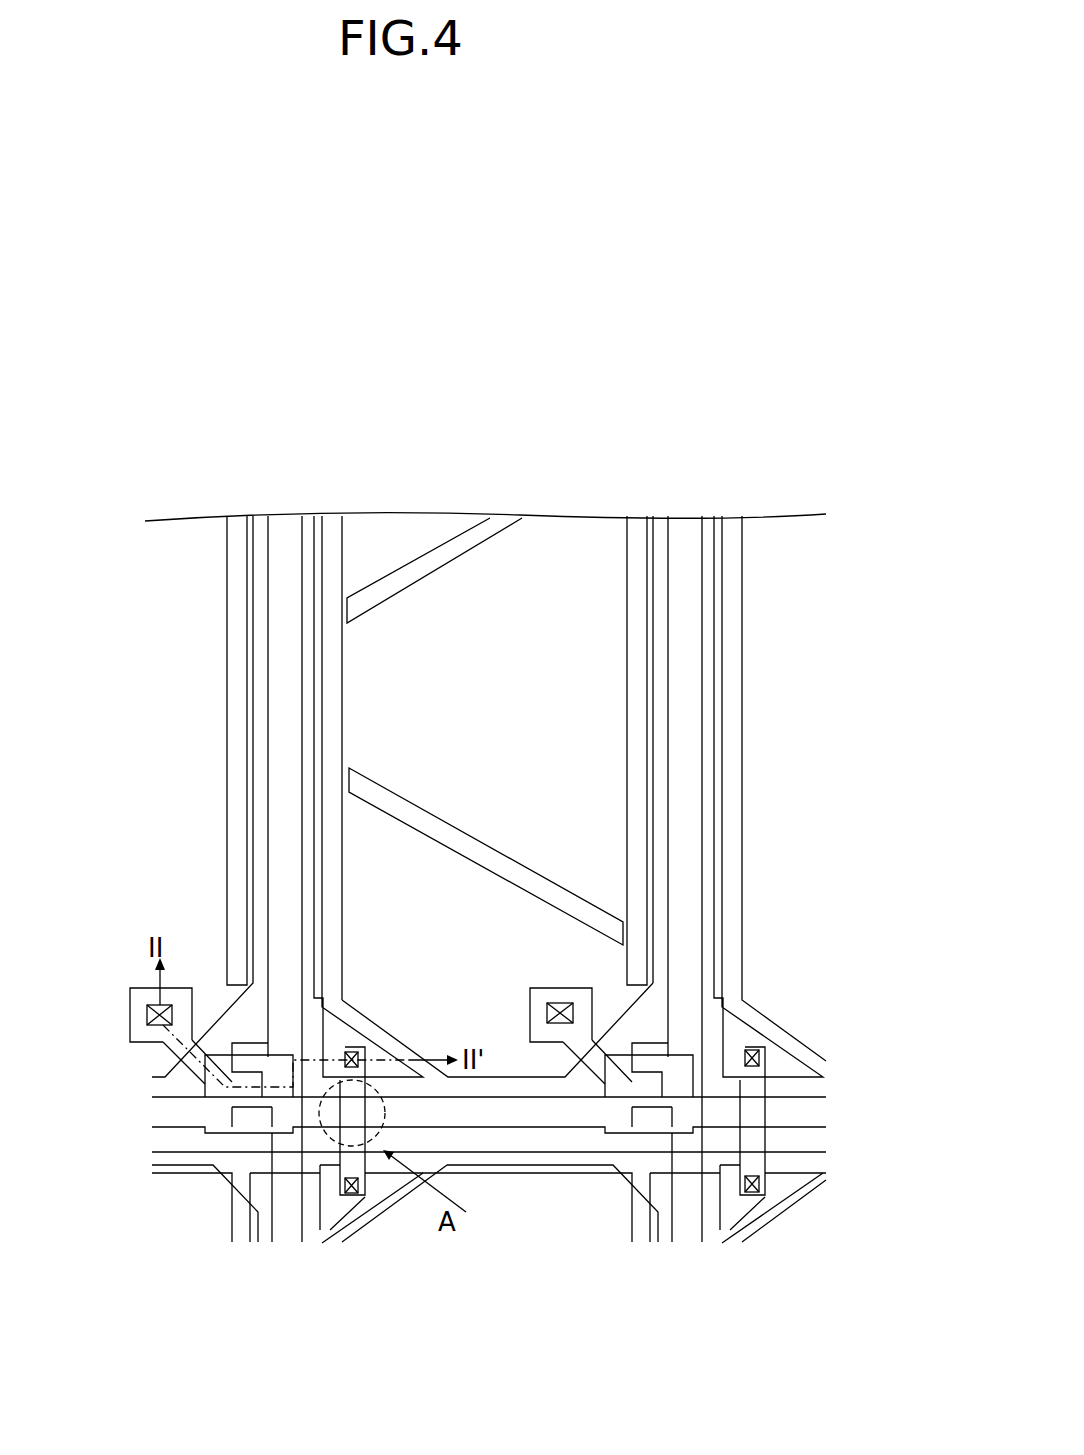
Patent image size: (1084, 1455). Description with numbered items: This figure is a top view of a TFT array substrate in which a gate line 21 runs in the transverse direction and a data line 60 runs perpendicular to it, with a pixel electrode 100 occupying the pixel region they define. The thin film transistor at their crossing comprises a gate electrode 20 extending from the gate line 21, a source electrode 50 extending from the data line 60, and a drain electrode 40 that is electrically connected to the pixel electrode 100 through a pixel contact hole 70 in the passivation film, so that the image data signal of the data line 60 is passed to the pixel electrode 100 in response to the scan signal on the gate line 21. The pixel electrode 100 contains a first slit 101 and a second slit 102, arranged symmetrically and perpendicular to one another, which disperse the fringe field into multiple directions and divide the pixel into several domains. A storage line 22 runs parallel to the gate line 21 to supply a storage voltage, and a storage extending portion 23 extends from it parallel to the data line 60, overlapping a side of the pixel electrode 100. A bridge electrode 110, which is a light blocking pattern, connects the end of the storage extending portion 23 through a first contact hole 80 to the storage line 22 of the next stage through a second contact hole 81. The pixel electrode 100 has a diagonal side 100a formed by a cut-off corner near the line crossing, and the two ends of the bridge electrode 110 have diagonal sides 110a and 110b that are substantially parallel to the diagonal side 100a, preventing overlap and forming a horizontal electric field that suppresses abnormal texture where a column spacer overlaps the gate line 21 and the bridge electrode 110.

The gate electrode 20 is at (200, 1082).
The gate line 21 is at (163, 1114).
The storage line 22 is at (160, 1163).
The storage extending portion 23 is at (237, 807).
The drain electrode 40 is at (131, 1008).
The source electrode 50 is at (262, 1126).
The data line 60 is at (284, 516).
The pixel contact hole 70 is at (146, 1026).
The first contact hole 80 is at (345, 1048).
The second contact hole 81 is at (352, 1198).
The pixel electrode 100 is at (360, 838).
The diagonal side 100a is at (413, 1050).
The first slit 101 is at (491, 846).
The second slit 102 is at (487, 541).
The bridge electrode 110 is at (364, 1228).
The diagonal side 110a is at (385, 1055).
The diagonal side 110b is at (392, 1225).